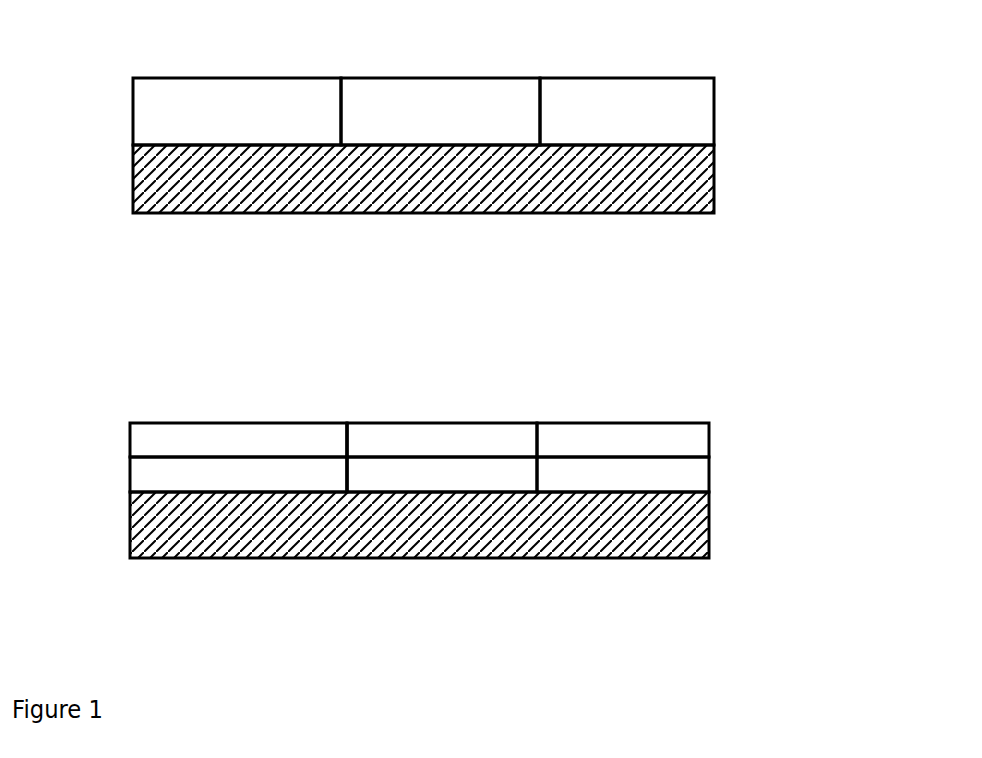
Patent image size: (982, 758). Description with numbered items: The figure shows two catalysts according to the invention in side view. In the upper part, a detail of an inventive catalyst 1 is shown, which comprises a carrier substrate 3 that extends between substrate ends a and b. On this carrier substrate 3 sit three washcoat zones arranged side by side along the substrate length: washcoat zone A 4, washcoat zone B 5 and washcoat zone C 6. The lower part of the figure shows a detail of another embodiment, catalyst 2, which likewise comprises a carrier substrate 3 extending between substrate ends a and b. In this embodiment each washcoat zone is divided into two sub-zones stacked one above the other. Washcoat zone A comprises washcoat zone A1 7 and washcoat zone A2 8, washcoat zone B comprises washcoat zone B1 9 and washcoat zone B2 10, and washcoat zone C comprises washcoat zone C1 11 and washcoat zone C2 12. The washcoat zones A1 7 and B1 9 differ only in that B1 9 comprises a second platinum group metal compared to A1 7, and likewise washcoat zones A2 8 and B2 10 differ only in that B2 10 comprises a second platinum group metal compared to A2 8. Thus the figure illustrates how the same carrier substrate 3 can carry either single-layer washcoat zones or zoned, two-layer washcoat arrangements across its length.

The inventive catalyst 1 is at (473, 323).
The catalyst 2 is at (468, 433).
The carrier substrate 3 is at (345, 213).
The washcoat zone A 4 is at (283, 112).
The washcoat zone B 5 is at (435, 108).
The washcoat zone C 6 is at (615, 110).
The washcoat zone A1 7 is at (337, 477).
The washcoat zone A2 8 is at (182, 447).
The washcoat zone B1 9 is at (487, 475).
The washcoat zone B2 10 is at (407, 442).
The washcoat zone C1 11 is at (615, 475).
The washcoat zone C2 12 is at (592, 450).